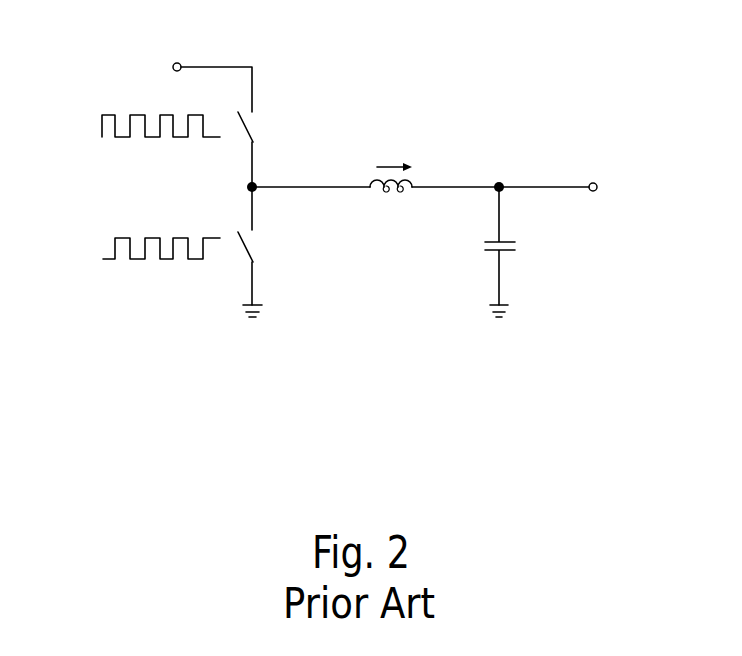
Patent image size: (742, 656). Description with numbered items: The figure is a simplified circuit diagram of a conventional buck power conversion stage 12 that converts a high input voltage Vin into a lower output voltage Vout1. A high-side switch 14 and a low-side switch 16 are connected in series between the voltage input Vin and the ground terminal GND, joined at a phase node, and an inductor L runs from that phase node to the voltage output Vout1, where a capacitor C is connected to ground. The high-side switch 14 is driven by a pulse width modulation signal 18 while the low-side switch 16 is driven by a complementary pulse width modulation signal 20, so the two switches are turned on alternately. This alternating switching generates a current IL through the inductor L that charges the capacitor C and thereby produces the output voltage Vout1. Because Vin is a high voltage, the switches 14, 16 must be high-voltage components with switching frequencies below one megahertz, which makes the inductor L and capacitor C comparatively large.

The power conversion stage 12 is at (648, 68).
The high-side switch 14 is at (263, 122).
The low-side switch 16 is at (263, 252).
The pulse width modulation signal 18 is at (93, 108).
The pulse width modulation signal 20 is at (93, 232).